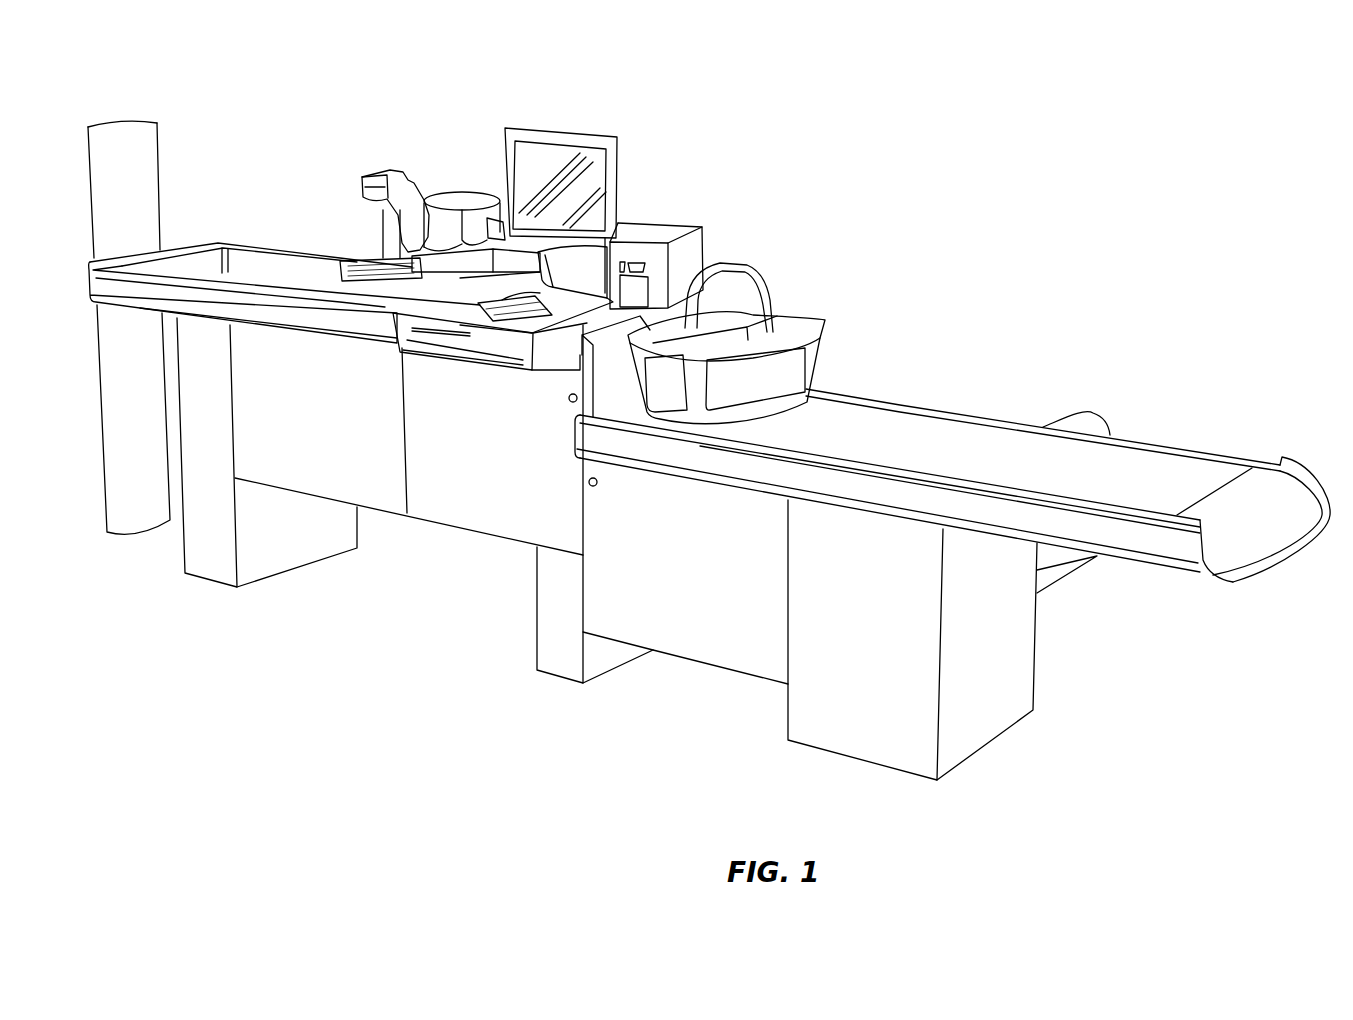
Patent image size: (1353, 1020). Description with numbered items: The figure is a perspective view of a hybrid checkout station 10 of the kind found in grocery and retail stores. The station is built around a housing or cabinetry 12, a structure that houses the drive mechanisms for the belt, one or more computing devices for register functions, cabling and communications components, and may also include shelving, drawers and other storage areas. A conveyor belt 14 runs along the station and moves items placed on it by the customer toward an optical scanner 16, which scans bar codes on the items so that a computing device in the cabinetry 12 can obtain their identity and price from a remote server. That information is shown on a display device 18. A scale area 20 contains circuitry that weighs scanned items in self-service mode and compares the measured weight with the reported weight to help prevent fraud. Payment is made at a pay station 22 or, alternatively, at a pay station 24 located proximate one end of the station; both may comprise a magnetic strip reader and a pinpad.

The hybrid checkout station 10 is at (1108, 137).
The cabinetry 12 is at (522, 507).
The conveyor belt 14 is at (905, 433).
The optical scanner 16 is at (525, 297).
The display device 18 is at (580, 137).
The scale area 20 is at (263, 273).
The pay station 22 is at (375, 178).
The pay station 24 is at (127, 123).